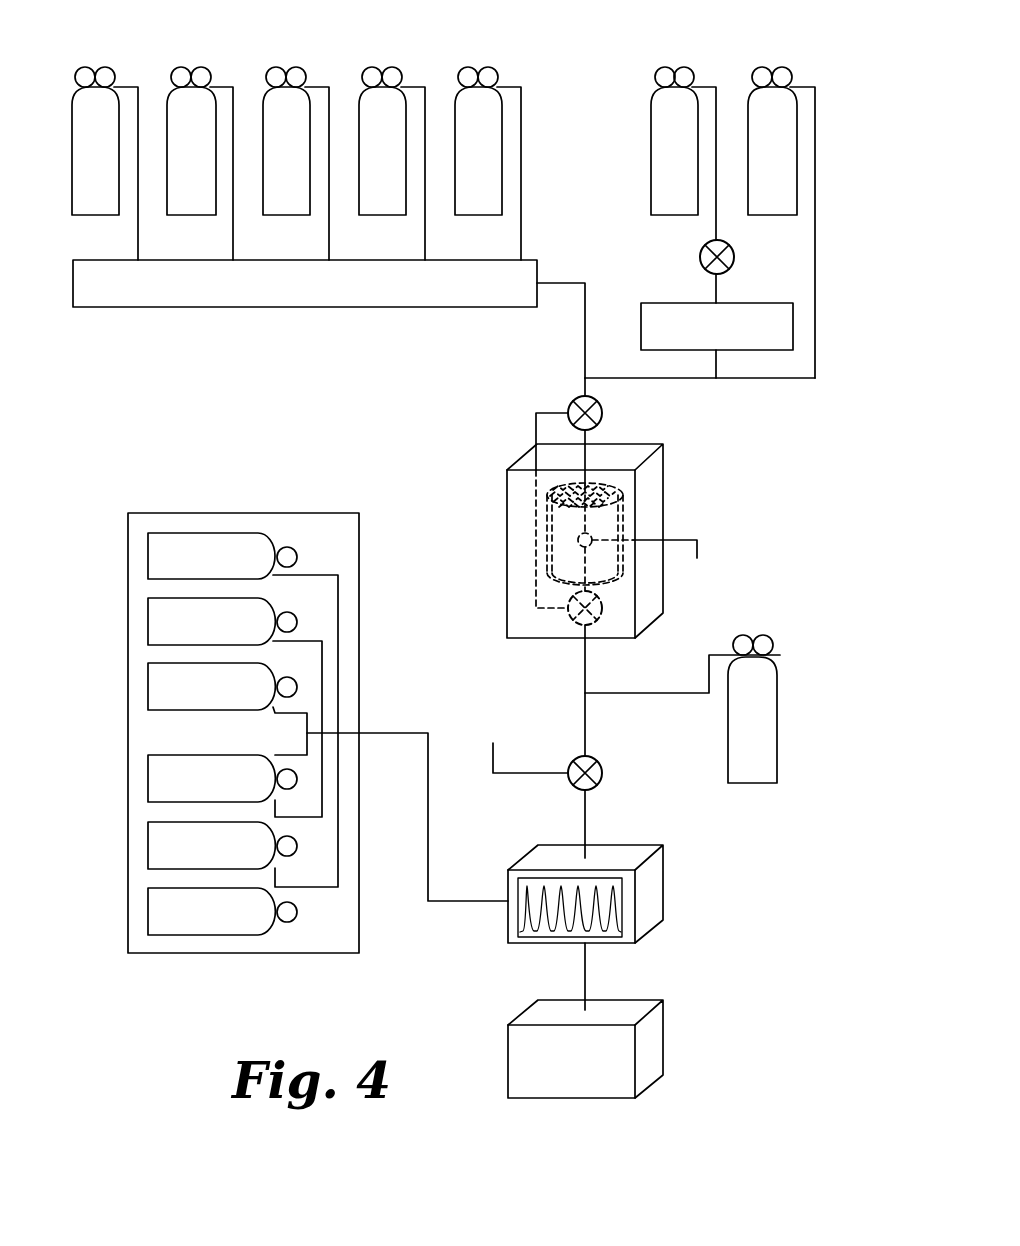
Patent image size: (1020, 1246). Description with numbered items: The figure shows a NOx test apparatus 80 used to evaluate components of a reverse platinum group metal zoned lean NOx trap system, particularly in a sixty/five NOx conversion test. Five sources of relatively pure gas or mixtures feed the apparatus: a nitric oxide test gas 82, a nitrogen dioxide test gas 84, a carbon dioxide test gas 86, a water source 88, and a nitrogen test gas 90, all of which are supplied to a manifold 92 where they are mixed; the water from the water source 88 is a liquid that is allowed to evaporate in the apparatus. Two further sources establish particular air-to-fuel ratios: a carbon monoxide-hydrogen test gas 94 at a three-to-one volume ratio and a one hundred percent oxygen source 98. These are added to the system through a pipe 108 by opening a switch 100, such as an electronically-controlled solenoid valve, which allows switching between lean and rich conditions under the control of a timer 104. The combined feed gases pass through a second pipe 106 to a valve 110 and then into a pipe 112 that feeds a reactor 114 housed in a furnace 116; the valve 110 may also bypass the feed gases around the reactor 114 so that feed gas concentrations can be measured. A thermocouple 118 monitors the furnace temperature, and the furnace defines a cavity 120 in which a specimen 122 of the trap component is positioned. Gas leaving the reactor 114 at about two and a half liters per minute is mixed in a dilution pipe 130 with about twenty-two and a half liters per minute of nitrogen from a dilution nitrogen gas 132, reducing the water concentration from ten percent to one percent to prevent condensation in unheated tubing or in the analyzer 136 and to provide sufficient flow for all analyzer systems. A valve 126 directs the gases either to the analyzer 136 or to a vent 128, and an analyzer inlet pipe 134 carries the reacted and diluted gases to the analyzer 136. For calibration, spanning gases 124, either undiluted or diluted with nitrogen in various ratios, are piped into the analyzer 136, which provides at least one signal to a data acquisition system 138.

The sample chamber assembly 80 is at (602, 525).
The nitric oxide test gas 82 is at (106, 68).
The nitrogen dioxide test gas 84 is at (202, 68).
The carbon dioxide test gas 86 is at (298, 68).
The water source 88 is at (394, 68).
The nitrogen test gas 90 is at (490, 68).
The manifold 92 is at (300, 308).
The carbon monoxide-hydrogen test gas 94 is at (681, 66).
The oxygen source 98 is at (778, 66).
The switch 100 is at (699, 258).
The timer 104 is at (775, 353).
The second pipe 106 is at (563, 282).
The pipe 108 is at (666, 380).
The valve 110 is at (603, 412).
The pipe 112 is at (585, 387).
The reactor 114 is at (605, 558).
The furnace 116 is at (652, 513).
The thermocouple 118 is at (702, 552).
The cavity 120 is at (547, 558).
The specimen 122 is at (576, 540).
The spanning gases 124 is at (243, 513).
The valve 126 is at (603, 776).
The vent 128 is at (522, 772).
The dilution pipe 130 is at (585, 707).
The dilution nitrogen gas 132 is at (778, 727).
The analyzer inlet pipe 134 is at (588, 820).
The analyzer 136 is at (650, 892).
The data acquisition system 138 is at (650, 1048).